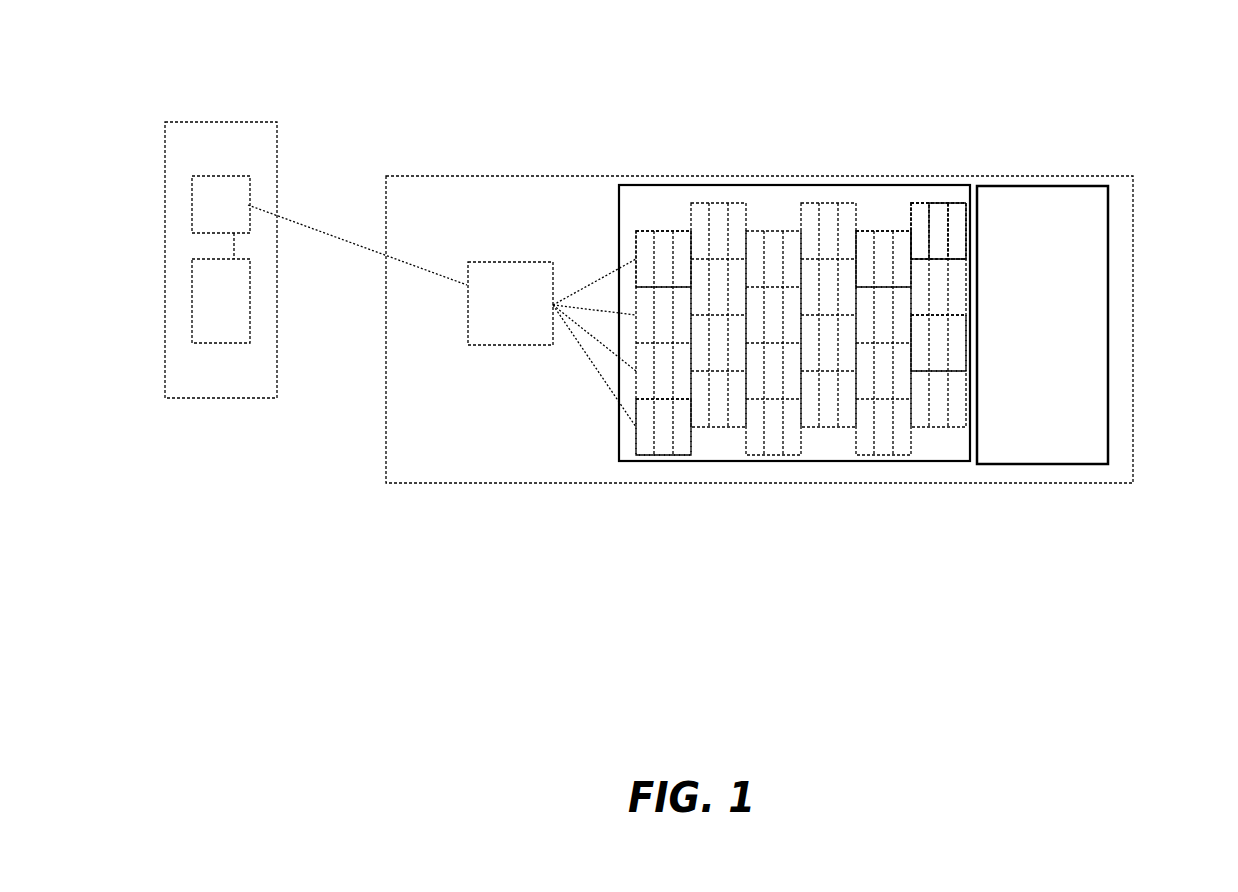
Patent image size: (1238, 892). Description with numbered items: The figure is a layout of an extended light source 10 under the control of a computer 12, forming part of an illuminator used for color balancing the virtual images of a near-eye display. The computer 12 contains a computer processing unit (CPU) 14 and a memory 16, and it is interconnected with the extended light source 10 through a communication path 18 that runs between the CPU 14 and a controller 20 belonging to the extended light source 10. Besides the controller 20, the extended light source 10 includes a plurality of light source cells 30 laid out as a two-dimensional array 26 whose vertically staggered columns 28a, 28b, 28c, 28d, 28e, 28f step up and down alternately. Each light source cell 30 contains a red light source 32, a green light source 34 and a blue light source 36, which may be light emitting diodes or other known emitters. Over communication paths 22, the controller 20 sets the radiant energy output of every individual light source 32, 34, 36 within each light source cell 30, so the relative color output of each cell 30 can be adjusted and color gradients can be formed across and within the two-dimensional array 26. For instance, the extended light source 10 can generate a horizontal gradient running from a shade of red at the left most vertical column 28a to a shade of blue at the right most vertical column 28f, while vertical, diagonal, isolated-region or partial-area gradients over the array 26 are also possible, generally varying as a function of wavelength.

The extended light source 10 is at (1027, 172).
The computer 12 is at (199, 116).
The computer processing unit (CPU) 14 is at (192, 205).
The memory 16 is at (243, 332).
The communication path 18 is at (340, 237).
The controller 20 is at (470, 310).
The communication paths 22 is at (600, 277).
The two-dimensional array 26 is at (755, 190).
The left most vertical column 28a is at (665, 455).
The vertical column 28b is at (716, 205).
The vertical column 28c is at (758, 452).
The vertical column 28d is at (822, 205).
The vertical column 28e is at (870, 455).
The right most vertical column 28f is at (958, 427).
The light source cell 30 is at (662, 222).
The red light source 32 is at (920, 205).
The green light source 34 is at (937, 205).
The blue light source 36 is at (960, 205).